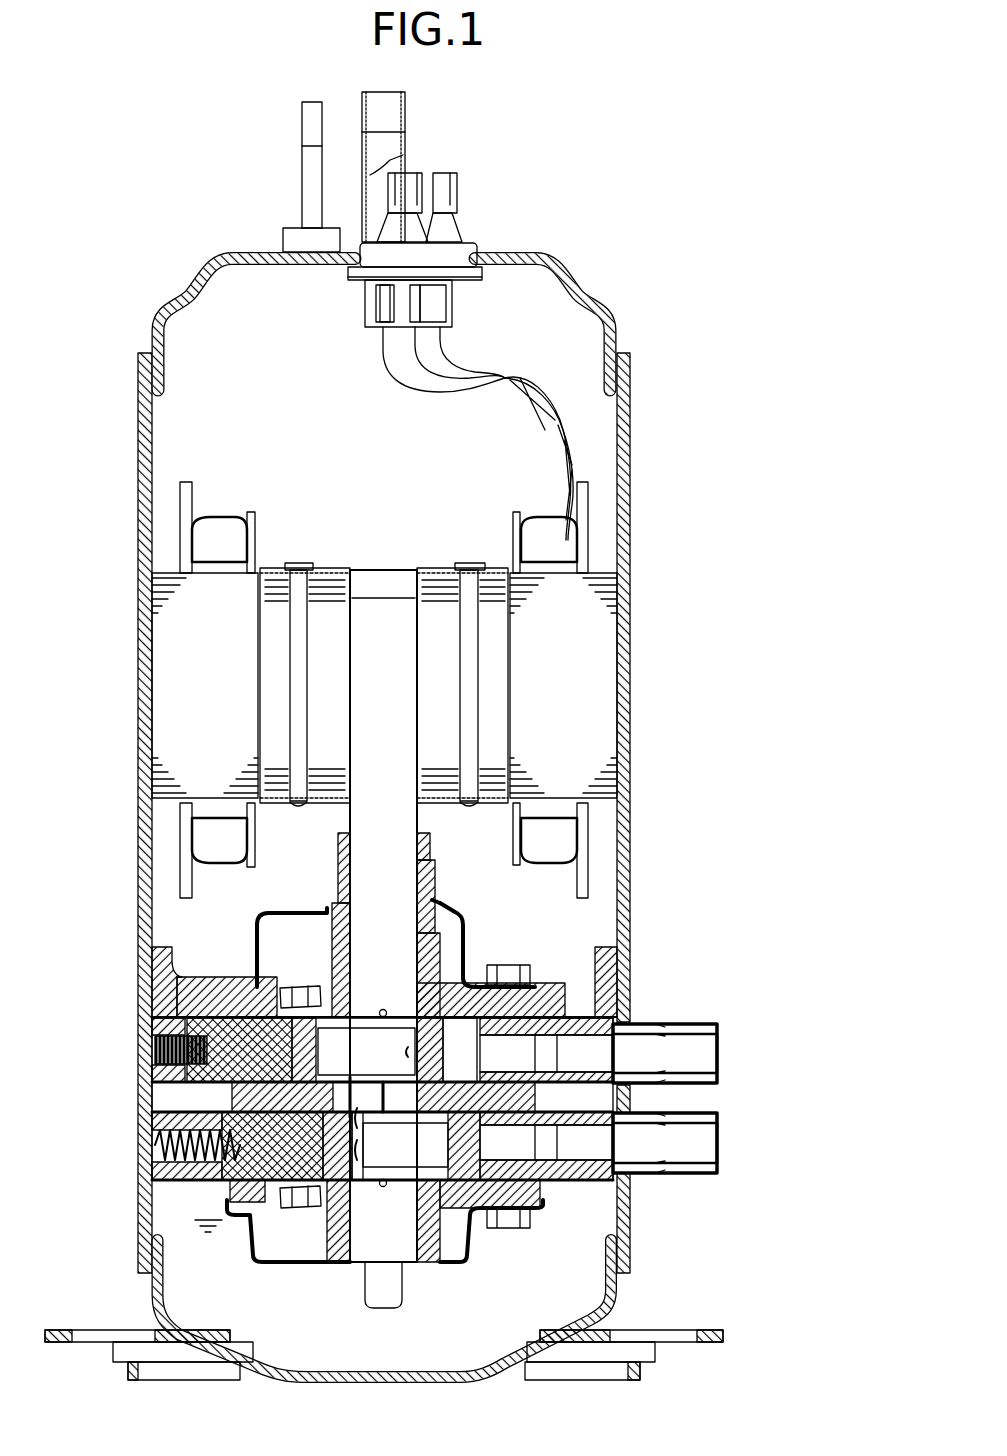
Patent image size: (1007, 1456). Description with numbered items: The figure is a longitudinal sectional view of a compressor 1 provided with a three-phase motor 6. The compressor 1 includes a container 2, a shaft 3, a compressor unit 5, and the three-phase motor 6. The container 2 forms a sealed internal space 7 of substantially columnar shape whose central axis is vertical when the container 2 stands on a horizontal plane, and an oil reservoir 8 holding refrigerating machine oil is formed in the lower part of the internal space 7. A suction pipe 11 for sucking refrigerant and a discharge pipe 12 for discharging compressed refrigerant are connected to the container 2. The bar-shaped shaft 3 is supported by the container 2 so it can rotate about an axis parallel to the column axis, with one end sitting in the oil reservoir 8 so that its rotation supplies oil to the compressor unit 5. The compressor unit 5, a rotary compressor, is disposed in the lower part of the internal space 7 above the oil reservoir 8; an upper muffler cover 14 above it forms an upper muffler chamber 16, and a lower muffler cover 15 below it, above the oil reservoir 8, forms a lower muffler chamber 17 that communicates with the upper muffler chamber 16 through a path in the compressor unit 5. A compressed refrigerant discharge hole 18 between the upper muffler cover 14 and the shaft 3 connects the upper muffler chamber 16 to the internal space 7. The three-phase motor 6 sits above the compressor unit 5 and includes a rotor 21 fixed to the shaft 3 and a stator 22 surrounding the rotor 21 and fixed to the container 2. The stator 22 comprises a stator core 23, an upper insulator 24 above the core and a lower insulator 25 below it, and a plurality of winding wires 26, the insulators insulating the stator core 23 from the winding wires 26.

The compressor 1 is at (676, 151).
The container 2 is at (188, 282).
The shaft 3 is at (340, 820).
The compressor unit 5 is at (205, 1201).
The three-phase motor 6 is at (205, 478).
The internal space 7 is at (262, 290).
The oil reservoir 8 is at (185, 1296).
The suction pipe 11 is at (720, 1095).
The discharge pipe 12 is at (407, 110).
The upper muffler cover 14 is at (440, 904).
The lower muffler cover 15 is at (457, 1263).
The upper muffler chamber 16 is at (447, 950).
The lower muffler chamber 17 is at (455, 1237).
The compressed refrigerant discharge hole 18 is at (437, 905).
The rotor 21 is at (445, 565).
The stator 22 is at (514, 494).
The stator core 23 is at (188, 689).
The upper insulator 24 is at (185, 563).
The lower insulator 25 is at (188, 851).
The winding wires 26 is at (212, 530).